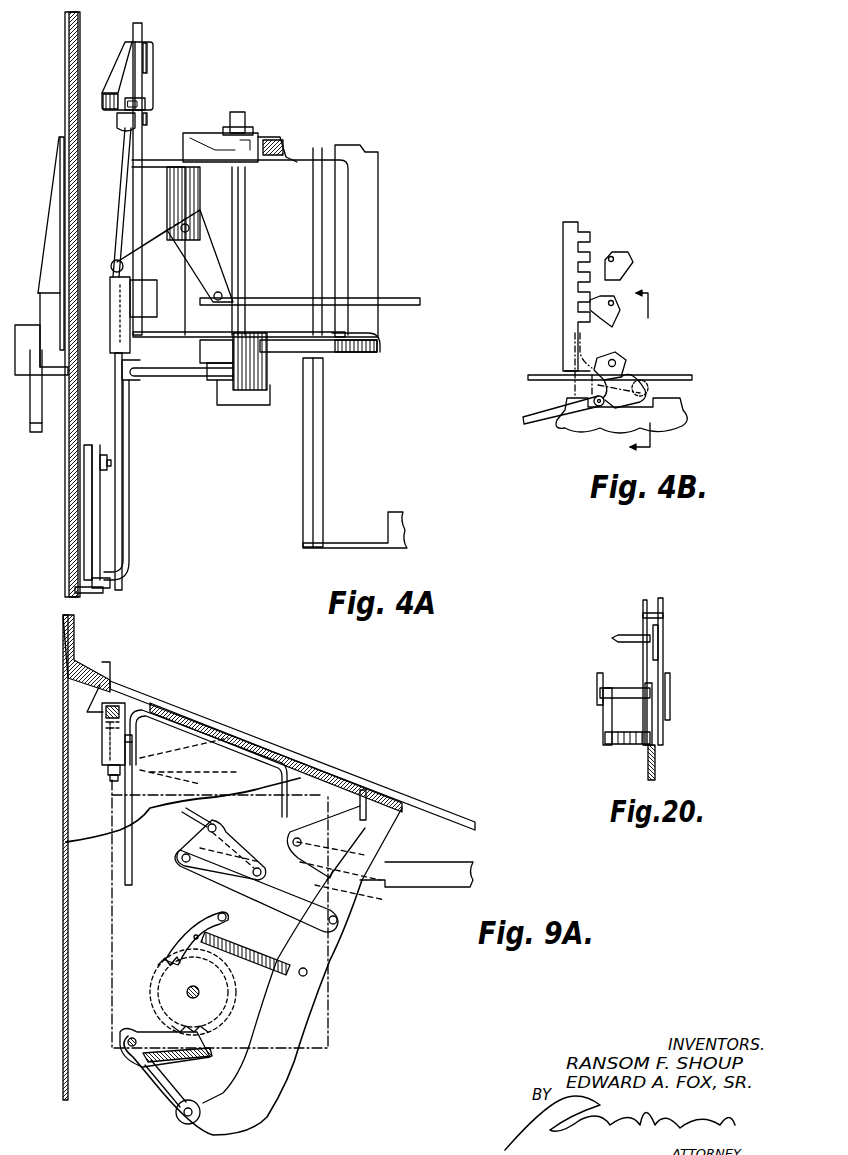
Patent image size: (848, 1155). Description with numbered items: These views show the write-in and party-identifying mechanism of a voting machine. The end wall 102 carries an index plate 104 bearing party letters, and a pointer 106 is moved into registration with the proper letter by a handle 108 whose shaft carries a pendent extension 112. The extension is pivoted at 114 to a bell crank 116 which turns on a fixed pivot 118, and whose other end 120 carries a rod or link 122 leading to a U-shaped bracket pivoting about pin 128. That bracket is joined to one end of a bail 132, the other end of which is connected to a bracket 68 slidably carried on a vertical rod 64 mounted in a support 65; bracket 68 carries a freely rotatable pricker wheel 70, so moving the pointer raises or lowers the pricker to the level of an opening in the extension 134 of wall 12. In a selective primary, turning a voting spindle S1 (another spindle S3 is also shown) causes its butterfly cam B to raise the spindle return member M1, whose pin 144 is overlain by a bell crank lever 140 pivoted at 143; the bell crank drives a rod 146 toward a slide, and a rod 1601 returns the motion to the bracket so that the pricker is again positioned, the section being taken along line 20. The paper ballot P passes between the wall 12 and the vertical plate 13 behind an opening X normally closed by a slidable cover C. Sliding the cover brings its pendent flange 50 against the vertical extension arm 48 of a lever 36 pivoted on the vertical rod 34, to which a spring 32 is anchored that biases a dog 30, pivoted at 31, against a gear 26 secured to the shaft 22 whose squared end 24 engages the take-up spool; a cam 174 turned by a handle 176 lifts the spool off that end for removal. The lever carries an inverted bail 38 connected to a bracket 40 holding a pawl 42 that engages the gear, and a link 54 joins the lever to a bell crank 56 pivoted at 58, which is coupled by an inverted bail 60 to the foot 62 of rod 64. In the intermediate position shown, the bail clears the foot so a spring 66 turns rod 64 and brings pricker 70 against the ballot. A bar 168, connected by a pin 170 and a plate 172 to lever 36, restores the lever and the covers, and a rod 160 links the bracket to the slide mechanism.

In FIG. 4A, the index plate 104 is at (65, 82).
In FIG. 4A, the pointer 106 is at (50, 195).
In FIG. 4A, the handle 108 is at (30, 430).
In FIG. 4A, the vertical rod 64 is at (143, 32).
In FIG. 9A, the vertical rod 64 is at (115, 706).
In FIG. 4A, the bracket 68 is at (122, 62).
In FIG. 9A, the bracket 68 is at (108, 770).
In FIG. 4A, the pricker wheel 70 is at (142, 104).
In FIG. 9A, the pricker wheel 70 is at (102, 744).
In FIG. 4A, the cam 174 is at (208, 140).
In FIG. 4A, the squared end of shaft 24 is at (250, 128).
In FIG. 4A, the handle 176 is at (290, 152).
In FIG. 4A, the vertical extension arm 48 is at (370, 190).
In FIG. 9A, the vertical extension arm 48 is at (385, 790).
In FIG. 4A, the vertical rod 34 is at (316, 262).
In FIG. 9A, the vertical rod 34 is at (310, 972).
In FIG. 4A, the shaft 22 is at (240, 212).
In FIG. 9A, the shaft 22 is at (185, 988).
In FIG. 4A, the pin 128 is at (172, 256).
In FIG. 4A, the bail 132 is at (116, 232).
In FIG. 4A, the support 65 is at (143, 305).
In FIG. 4A, the rod 160 is at (398, 299).
In FIG. 4A, the pawl 42 is at (205, 350).
In FIG. 9A, the pawl 42 is at (195, 1060).
In FIG. 4A, the foot 62 is at (143, 362).
In FIG. 9A, the foot 62 is at (112, 782).
In FIG. 4A, the inverted bail 60 is at (188, 376).
In FIG. 9A, the inverted bail 60 is at (180, 815).
In FIG. 4A, the inverted bail 38 is at (240, 405).
In FIG. 9A, the inverted bail 38 is at (172, 1102).
In FIG. 4A, the bracket 40 is at (276, 390).
In FIG. 9A, the bracket 40 is at (140, 1020).
In FIG. 4A, the lever 36 is at (372, 342).
In FIG. 9A, the lever 36 is at (312, 1012).
In FIG. 4A, the plate 172 is at (358, 353).
In FIG. 9A, the plate 172 is at (350, 830).
In FIG. 4A, the pin 170 is at (318, 410).
In FIG. 9A, the pin 170 is at (293, 842).
In FIG. 4A, the bar 168 is at (350, 543).
In FIG. 9A, the bar 168 is at (433, 882).
In FIG. 4A, the pendent extension 112 is at (118, 435).
In FIG. 4A, the pivot 114 is at (111, 465).
In FIG. 4A, the rod or link 122 is at (128, 483).
In FIG. 4A, the end wall 102 is at (76, 503).
In FIG. 9A, the end wall 102 is at (63, 772).
In FIG. 4A, the bell crank 116 is at (98, 514).
In FIG. 4A, the fixed pivot 118 is at (110, 582).
In FIG. 4A, the end of bell crank 120 is at (98, 592).
In FIG. 4B, the spindle return member M1 is at (575, 220).
In FIG. 20, the spindle return member M1 is at (665, 612).
In FIG. 4B, the voting spindle S1 is at (624, 254).
In FIG. 4B, the butterfly cam B is at (634, 262).
In FIG. 20, the butterfly cam B is at (660, 650).
In FIG. 4B, the section line 20 is at (624, 368).
In FIG. 4B, the voting spindle S3 is at (618, 315).
In FIG. 20, the voting spindle S3 is at (620, 634).
In FIG. 4B, the pivot 143 is at (624, 358).
In FIG. 20, the pivot 143 is at (628, 688).
In FIG. 4B, the pin 144 is at (590, 370).
In FIG. 4B, the rod 1601 is at (683, 375).
In FIG. 4B, the bell crank lever 140 is at (648, 392).
In FIG. 20, the bell crank lever 140 is at (604, 722).
In FIG. 4B, the rod 146 is at (525, 424).
In FIG. 20, the rod 146 is at (612, 748).
In FIG. 9A, the vertical wall 12 is at (147, 712).
In FIG. 9A, the opening X is at (215, 718).
In FIG. 9A, the cover C is at (250, 738).
In FIG. 9A, the extension 134 is at (136, 742).
In FIG. 9A, the spring 66 is at (185, 770).
In FIG. 9A, the vertical plate 13 is at (272, 765).
In FIG. 9A, the paper ballot P is at (133, 875).
In FIG. 9A, the pivot 58 is at (215, 826).
In FIG. 9A, the bell crank 56 is at (190, 846).
In FIG. 9A, the link 54 is at (282, 895).
In FIG. 9A, the pendent flange 50 is at (340, 812).
In FIG. 9A, the gear 26 is at (158, 962).
In FIG. 9A, the dog 30 is at (202, 920).
In FIG. 9A, the pivot 31 is at (228, 918).
In FIG. 9A, the spring 32 is at (262, 968).